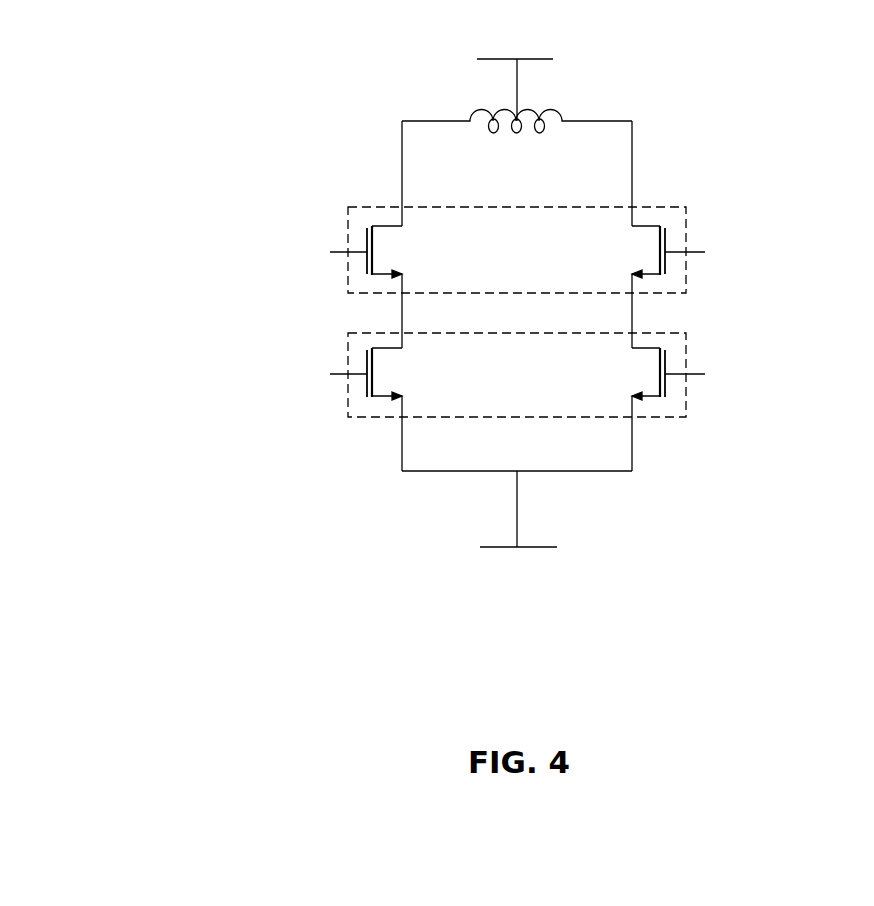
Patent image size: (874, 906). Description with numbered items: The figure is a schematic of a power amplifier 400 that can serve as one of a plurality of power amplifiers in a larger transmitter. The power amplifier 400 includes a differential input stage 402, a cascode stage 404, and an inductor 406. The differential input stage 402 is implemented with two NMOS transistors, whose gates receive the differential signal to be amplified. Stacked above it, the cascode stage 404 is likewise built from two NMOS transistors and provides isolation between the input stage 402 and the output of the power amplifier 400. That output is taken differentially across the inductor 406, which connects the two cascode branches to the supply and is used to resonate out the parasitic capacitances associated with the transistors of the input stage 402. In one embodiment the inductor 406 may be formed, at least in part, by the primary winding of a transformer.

The power amplifier 400 is at (433, 335).
The differential input stage 402 is at (687, 350).
The cascode stage 404 is at (686, 226).
The inductor 406 is at (565, 107).